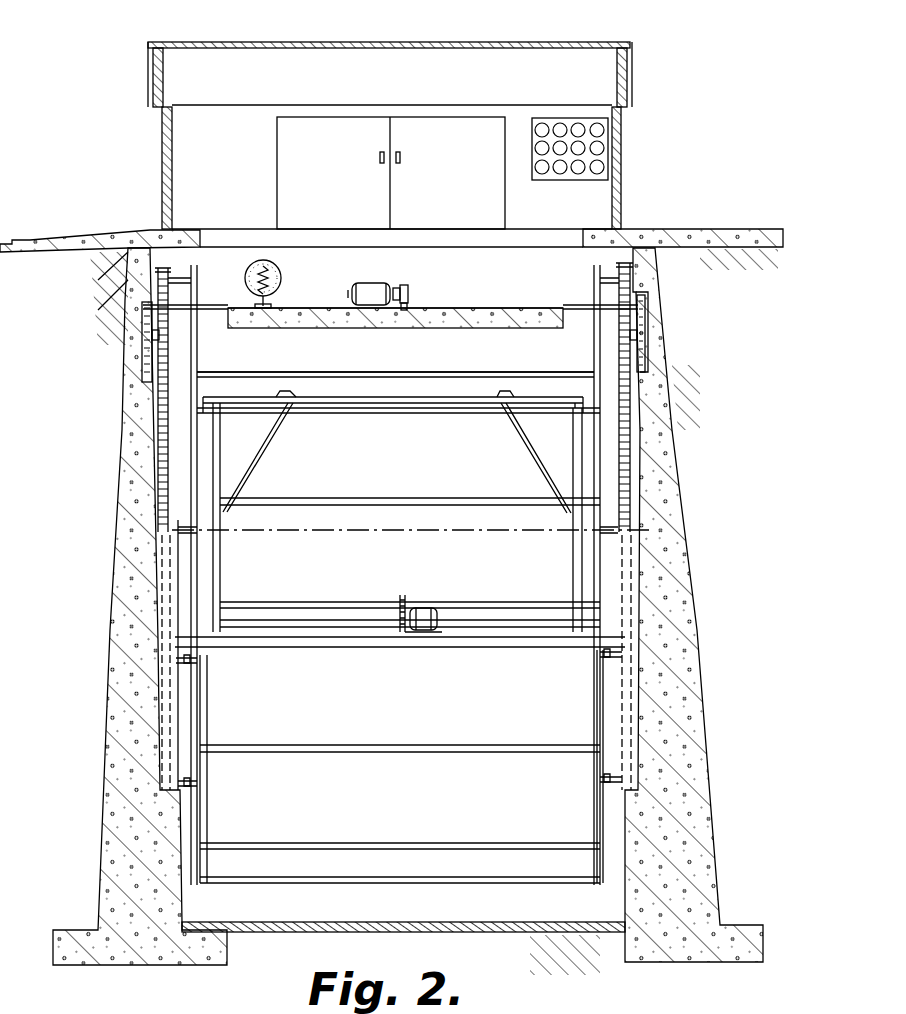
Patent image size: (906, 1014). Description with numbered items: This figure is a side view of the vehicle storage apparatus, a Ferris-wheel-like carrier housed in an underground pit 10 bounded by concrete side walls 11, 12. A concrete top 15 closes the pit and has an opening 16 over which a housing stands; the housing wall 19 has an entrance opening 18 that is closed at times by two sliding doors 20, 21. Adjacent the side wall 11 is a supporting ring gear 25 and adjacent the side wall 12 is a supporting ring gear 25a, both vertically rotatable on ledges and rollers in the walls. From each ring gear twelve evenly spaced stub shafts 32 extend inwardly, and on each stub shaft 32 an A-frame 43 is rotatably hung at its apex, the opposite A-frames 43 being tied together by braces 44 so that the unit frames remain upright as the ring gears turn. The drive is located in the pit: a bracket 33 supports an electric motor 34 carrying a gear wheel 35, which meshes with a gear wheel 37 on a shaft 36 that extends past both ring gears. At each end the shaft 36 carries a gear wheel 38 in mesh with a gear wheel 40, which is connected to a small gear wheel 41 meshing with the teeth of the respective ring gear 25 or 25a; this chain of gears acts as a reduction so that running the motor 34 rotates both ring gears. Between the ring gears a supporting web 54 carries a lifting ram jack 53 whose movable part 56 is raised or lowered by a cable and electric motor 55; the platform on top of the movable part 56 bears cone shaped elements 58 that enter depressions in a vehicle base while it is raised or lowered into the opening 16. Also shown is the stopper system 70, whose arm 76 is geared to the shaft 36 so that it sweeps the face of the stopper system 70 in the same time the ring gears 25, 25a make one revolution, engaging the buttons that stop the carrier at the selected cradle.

The underground pit 10 is at (282, 913).
The concrete side wall 11 is at (110, 823).
The concrete side wall 12 is at (697, 692).
The concrete top 15 is at (160, 232).
The opening 16 is at (553, 242).
The entrance opening 18 is at (278, 178).
The wall 19 is at (205, 125).
The sliding door 20 is at (325, 130).
The sliding door 21 is at (437, 130).
The supporting ring gear 25 is at (166, 274).
The supporting ring gear 25a is at (620, 268).
The stub shaft 32 is at (192, 283).
The bracket 33 is at (297, 328).
The electric motor 34 is at (372, 288).
The gear wheel 35 is at (406, 288).
The shaft 36 is at (500, 307).
The gear wheel 37 is at (410, 309).
The gear wheel 38 is at (142, 307).
The gear wheel 40 is at (141, 361).
The small gear wheel 41 is at (168, 335).
The A-frame 43 is at (197, 375).
The brace 44 is at (416, 372).
The lifting ram jack 53 is at (218, 556).
The supporting web 54 is at (300, 642).
The electric motor 55 is at (428, 610).
The movable part 56 is at (221, 412).
The cone shaped element 58 is at (277, 395).
The stopper system 70 is at (281, 287).
The arm 76 is at (272, 270).